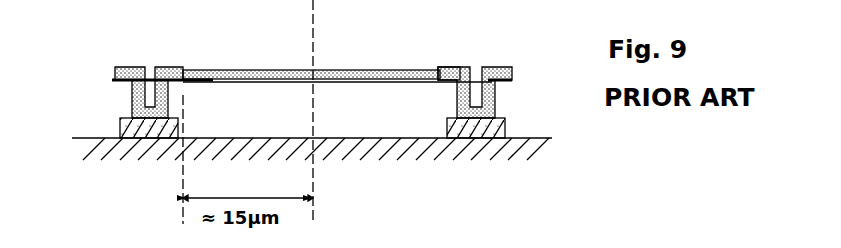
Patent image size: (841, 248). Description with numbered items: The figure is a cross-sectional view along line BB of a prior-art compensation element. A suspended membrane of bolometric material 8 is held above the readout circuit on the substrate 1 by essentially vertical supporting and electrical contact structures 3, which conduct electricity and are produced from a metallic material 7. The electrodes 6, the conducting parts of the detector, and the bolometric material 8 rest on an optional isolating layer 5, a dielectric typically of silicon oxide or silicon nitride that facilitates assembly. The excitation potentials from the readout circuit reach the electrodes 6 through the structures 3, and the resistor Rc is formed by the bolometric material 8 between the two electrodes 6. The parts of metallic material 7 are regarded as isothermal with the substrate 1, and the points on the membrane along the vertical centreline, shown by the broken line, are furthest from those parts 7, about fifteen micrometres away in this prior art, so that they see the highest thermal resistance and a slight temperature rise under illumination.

The substrate 1 is at (85, 138).
The supporting and electrical contact structure 3 is at (148, 67).
The isolating layer 5 is at (338, 84).
The electrode 6 is at (435, 72).
The metallic material 7 is at (498, 67).
The bolometric material 8 is at (290, 72).